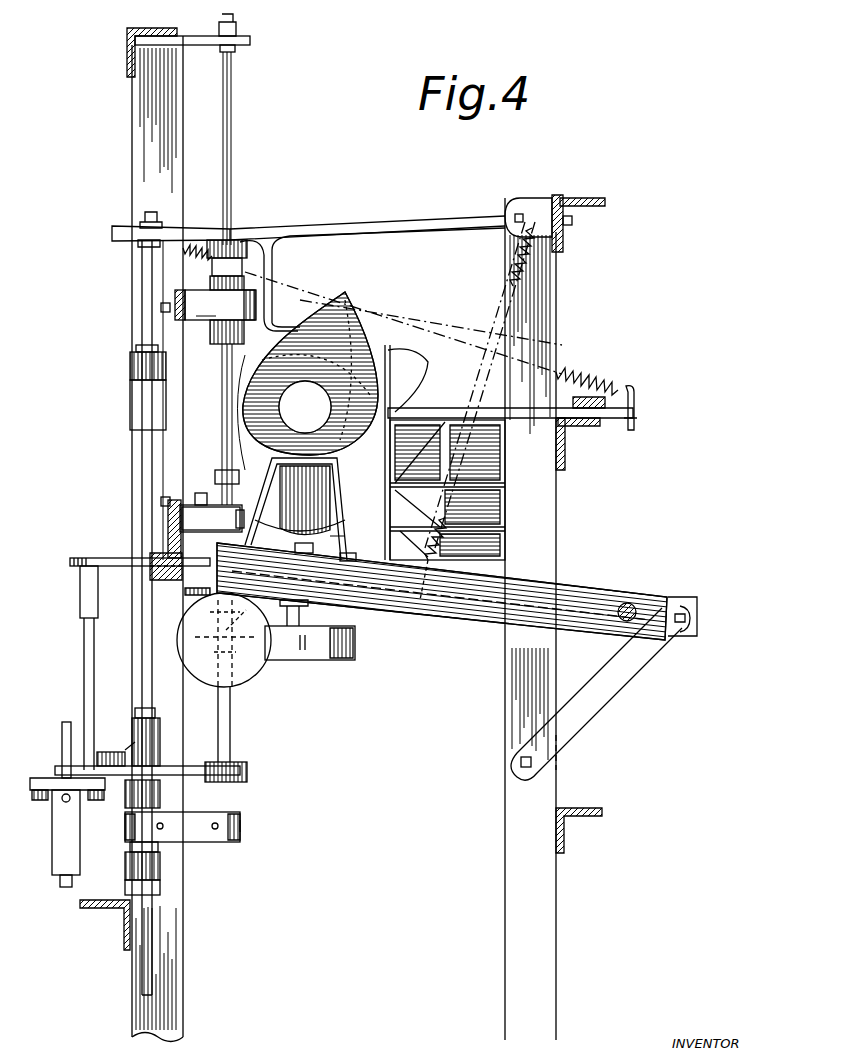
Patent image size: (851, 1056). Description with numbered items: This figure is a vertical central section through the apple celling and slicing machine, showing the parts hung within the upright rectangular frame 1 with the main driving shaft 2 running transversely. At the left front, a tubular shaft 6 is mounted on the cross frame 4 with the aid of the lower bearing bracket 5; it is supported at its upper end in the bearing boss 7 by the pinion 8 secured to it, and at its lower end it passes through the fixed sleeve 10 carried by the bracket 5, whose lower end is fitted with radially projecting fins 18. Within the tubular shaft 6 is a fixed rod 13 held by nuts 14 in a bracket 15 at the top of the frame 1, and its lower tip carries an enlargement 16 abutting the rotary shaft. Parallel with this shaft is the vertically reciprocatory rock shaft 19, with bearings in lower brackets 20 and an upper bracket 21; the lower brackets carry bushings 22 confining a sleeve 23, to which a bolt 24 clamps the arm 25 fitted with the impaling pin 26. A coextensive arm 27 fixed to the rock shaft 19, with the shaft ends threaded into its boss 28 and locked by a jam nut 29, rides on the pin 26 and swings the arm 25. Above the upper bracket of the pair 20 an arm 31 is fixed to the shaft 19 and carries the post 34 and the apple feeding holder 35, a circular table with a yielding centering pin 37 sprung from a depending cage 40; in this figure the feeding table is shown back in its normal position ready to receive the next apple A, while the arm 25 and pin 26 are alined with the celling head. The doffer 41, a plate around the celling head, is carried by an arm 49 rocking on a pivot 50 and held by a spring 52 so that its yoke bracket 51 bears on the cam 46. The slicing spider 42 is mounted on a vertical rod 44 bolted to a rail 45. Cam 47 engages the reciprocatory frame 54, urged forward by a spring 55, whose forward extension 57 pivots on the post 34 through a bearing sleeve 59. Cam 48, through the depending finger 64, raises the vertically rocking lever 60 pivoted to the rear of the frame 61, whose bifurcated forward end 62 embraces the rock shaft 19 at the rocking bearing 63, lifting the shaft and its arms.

The upright rectangular frame 1 is at (145, 130).
The main driving shaft 2 is at (308, 405).
The cross frame 4 is at (100, 527).
The lower bearing bracket 5 is at (232, 516).
The tubular shaft 6 is at (222, 404).
The bearing boss 7 is at (208, 266).
The pinion 8 is at (250, 245).
The fixed sleeve 10 is at (228, 616).
The fixed rod 13 is at (232, 118).
The nuts 14 is at (236, 26).
The bracket 15 is at (252, 41).
The enlargement 16 is at (228, 640).
The fins 18 is at (238, 626).
The rock shaft 19 is at (150, 452).
The lower brackets 20 is at (130, 796).
The upper bracket 21 is at (148, 386).
The bushings 22 is at (146, 370).
The sleeve 23 is at (130, 846).
The bolt 24 is at (182, 827).
The arm 25 is at (206, 842).
The impaling pin 26 is at (232, 736).
The arm 27 is at (194, 767).
The boss 28 is at (140, 730).
The jam nut 29 is at (138, 712).
The arm 31 is at (124, 760).
The post 34 is at (88, 658).
The apple feeding holder 35 is at (46, 776).
The centering pin 37 is at (66, 730).
The depending cage 40 is at (60, 826).
The doffer 41 is at (196, 590).
The slicing spider 42 is at (340, 660).
The vertical rod 44 is at (300, 616).
The rail 45 is at (488, 503).
The cam 46 is at (355, 330).
The cam 47 is at (300, 509).
The cam 48 is at (406, 362).
The arm 49 is at (447, 600).
The pivot 50 is at (632, 604).
The yoke bracket 51 is at (345, 500).
The spring 52 is at (530, 262).
The reciprocatory frame 54 is at (526, 414).
The spring 55 is at (592, 376).
The forward extension 57 is at (80, 560).
The bearing sleeve 59 is at (82, 580).
The vertically rocking lever 60 is at (388, 225).
The rear of the frame 61 is at (518, 216).
The bifurcated forward end 62 is at (126, 240).
The rocking bearing 63 is at (137, 230).
The depending finger 64 is at (274, 262).
The apple A is at (256, 666).